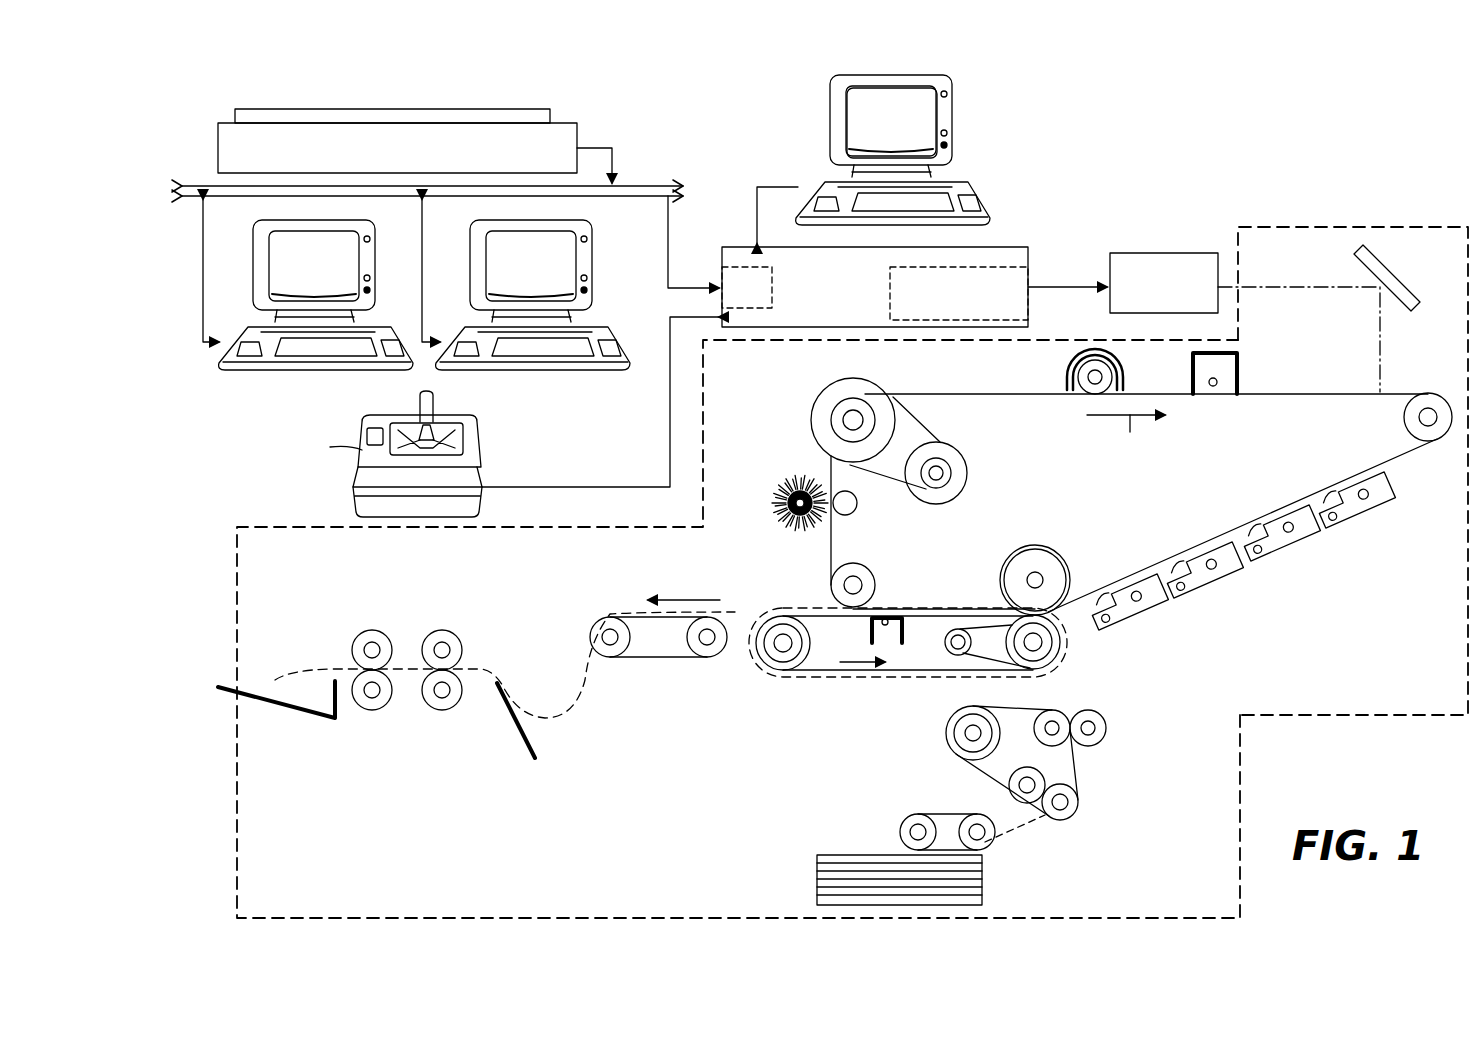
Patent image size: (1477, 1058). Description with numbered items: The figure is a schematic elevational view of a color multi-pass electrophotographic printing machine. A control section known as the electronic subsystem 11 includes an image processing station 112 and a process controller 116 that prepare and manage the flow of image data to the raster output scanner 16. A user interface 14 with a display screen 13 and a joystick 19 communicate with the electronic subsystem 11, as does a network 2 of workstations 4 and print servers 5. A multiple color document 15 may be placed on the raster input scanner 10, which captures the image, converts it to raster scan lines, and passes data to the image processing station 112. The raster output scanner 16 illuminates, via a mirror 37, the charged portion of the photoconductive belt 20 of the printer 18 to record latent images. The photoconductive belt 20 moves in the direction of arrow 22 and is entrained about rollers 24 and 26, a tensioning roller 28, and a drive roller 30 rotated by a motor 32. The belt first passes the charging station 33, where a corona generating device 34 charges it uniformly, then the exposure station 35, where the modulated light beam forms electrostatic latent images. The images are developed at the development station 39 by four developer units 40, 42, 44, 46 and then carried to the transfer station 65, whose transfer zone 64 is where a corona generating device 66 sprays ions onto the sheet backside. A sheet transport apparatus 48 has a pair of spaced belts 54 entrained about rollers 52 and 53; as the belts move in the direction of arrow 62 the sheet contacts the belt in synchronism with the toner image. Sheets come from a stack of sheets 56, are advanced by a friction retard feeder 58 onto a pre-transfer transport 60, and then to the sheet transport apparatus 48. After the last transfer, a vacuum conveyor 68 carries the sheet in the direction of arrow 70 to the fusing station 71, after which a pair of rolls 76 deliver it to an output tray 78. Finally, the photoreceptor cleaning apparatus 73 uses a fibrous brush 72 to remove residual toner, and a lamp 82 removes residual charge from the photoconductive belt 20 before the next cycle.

The raster input scanner 10 is at (222, 116).
The multiple color document 15 is at (517, 108).
The network 2 is at (380, 197).
The print server 5 is at (372, 330).
The workstation 4 is at (590, 333).
The user interface 14 is at (818, 109).
The display screen 13 is at (922, 122).
The image processing station 112 is at (740, 262).
The electronic subsystem 11 is at (1010, 247).
The process controller 116 is at (1030, 305).
The raster output scanner 16 is at (1170, 248).
The printer 18 is at (1343, 440).
The mirror 37 is at (1392, 273).
The charging station 33 is at (1243, 388).
The corona generating device 34 is at (1193, 375).
The photoconductive belt 20 is at (1326, 393).
The exposure station 35 is at (1392, 388).
The lamp 82 is at (1066, 373).
The drive roller 30 is at (836, 384).
The motor 32 is at (966, 467).
The roller 24 is at (857, 565).
The roller 26 is at (1050, 547).
The tensioning roller 28 is at (1443, 440).
The arrow 22 is at (1126, 445).
The photoreceptor cleaning apparatus 73 is at (784, 481).
The fibrous brush 72 is at (771, 503).
The transfer zone 64 is at (899, 600).
The development station 39 is at (1250, 568).
The developer unit 40 is at (1363, 520).
The developer unit 42 is at (1288, 553).
The developer unit 44 is at (1212, 588).
The developer unit 46 is at (1136, 617).
The sheet transport apparatus 48 is at (892, 654).
The roller 53 is at (770, 618).
The roller 52 is at (1041, 671).
The transfer station 65 is at (929, 664).
The corona generating device 66 is at (870, 636).
The arrow 62 is at (860, 662).
The spaced belts 54 is at (912, 672).
The pre-transfer transport 60 is at (1068, 762).
The friction retard feeder 58 is at (948, 814).
The stack of sheets 56 is at (868, 855).
The joystick 19 is at (362, 452).
The arrow 70 is at (658, 628).
The vacuum conveyor 68 is at (660, 660).
The pair of rolls 76 is at (375, 630).
The fusing station 71 is at (440, 622).
The output tray 78 is at (283, 708).